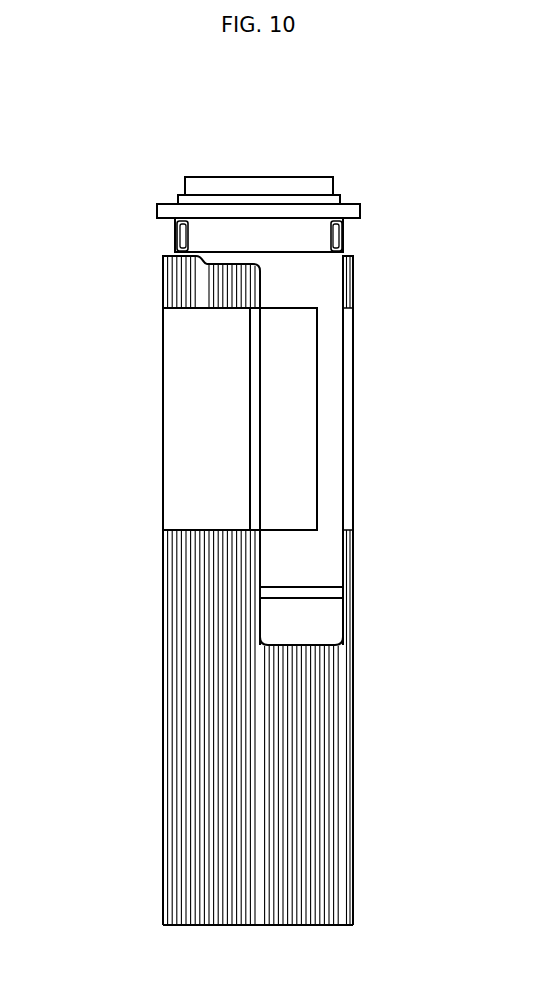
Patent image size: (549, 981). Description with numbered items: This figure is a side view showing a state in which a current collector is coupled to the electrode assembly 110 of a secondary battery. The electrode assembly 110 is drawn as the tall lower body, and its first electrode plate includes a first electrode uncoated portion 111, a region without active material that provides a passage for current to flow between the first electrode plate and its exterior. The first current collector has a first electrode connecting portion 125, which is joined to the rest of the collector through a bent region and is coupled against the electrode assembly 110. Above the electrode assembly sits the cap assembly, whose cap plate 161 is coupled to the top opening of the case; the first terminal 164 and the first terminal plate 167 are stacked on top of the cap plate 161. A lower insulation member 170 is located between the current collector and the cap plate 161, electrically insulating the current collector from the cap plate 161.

The electrode assembly 110 is at (141, 643).
The first electrode uncoated portion 111 is at (300, 450).
The first electrode connecting portion 125 is at (322, 290).
The cap plate 161 is at (165, 212).
The first terminal 164 is at (235, 185).
The first terminal plate 167 is at (305, 200).
The lower insulation member 170 is at (173, 237).